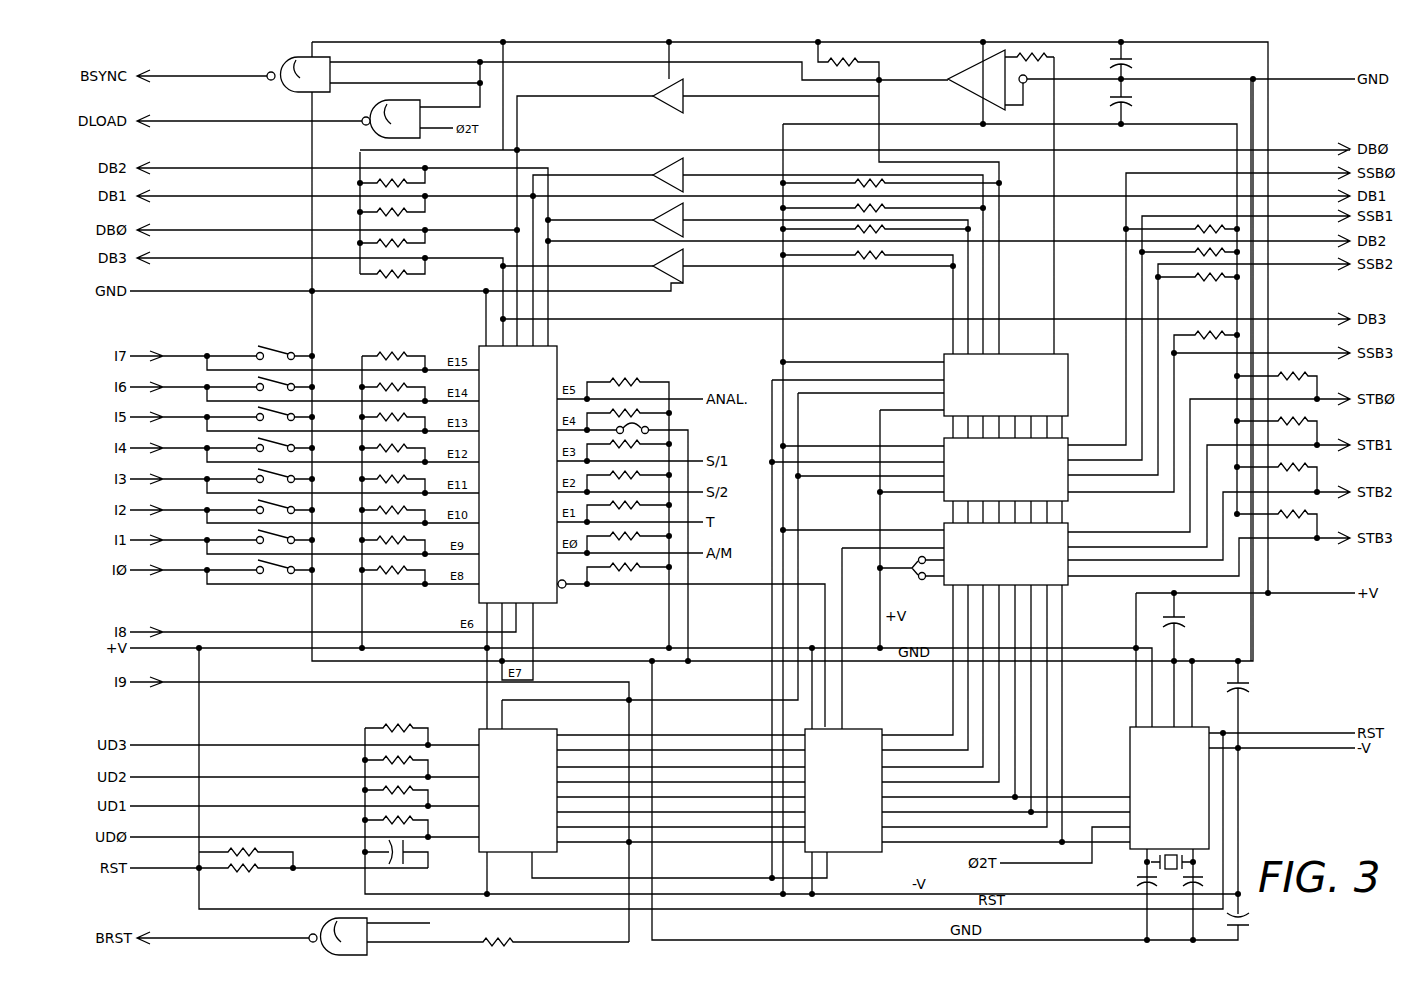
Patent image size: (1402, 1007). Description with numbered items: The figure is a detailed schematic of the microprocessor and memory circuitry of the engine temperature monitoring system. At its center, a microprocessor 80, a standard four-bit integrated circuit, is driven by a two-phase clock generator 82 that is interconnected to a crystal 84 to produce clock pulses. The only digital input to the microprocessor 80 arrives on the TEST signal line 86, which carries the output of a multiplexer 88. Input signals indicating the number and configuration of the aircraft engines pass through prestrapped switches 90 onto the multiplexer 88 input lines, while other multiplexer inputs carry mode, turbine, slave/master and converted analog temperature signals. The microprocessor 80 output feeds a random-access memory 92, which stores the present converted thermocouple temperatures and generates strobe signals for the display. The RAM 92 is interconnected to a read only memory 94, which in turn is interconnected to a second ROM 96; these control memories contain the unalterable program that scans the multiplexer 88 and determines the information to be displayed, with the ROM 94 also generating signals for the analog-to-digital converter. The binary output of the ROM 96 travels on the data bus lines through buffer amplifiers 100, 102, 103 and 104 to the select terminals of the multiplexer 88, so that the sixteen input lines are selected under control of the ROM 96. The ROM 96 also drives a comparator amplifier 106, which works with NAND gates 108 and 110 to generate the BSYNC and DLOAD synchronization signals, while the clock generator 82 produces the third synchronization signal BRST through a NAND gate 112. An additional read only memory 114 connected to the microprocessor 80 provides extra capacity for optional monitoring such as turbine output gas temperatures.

The microprocessor 80 is at (858, 831).
The two-phase clock generator 82 is at (1185, 829).
The crystal 84 is at (1138, 870).
The signal line 86 is at (730, 586).
The multiplexer 88 is at (536, 561).
The switches 90 is at (292, 342).
The random-access-memory (RAM) 92 is at (1054, 572).
The read only memory (ROM) 94 is at (1053, 452).
The ROM 96 is at (1053, 389).
The buffer amplifier 100 is at (686, 94).
The buffer amplifier 102 is at (682, 180).
The buffer amplifier 103 is at (682, 225).
The buffer amplifier 104 is at (682, 271).
The amplifier 106 is at (973, 76).
The NAND gate 108 is at (298, 59).
The NAND gate 110 is at (378, 120).
The NAND gate 112 is at (330, 932).
The read only memory I/C 114 is at (500, 831).